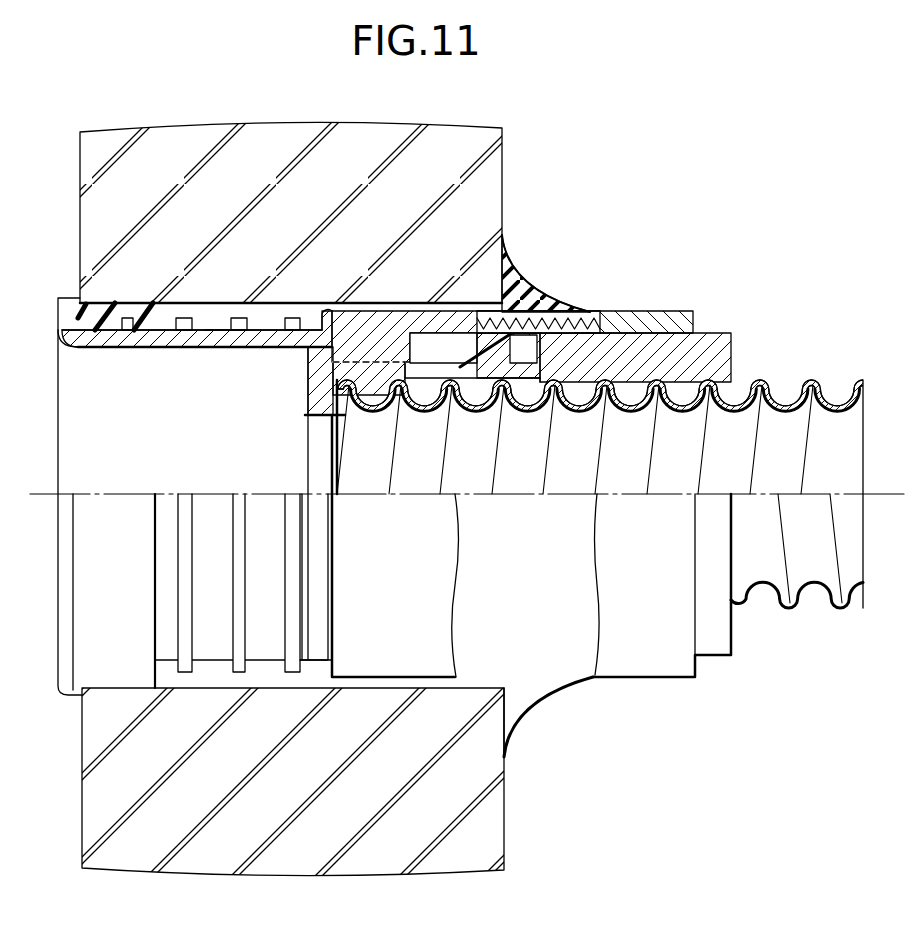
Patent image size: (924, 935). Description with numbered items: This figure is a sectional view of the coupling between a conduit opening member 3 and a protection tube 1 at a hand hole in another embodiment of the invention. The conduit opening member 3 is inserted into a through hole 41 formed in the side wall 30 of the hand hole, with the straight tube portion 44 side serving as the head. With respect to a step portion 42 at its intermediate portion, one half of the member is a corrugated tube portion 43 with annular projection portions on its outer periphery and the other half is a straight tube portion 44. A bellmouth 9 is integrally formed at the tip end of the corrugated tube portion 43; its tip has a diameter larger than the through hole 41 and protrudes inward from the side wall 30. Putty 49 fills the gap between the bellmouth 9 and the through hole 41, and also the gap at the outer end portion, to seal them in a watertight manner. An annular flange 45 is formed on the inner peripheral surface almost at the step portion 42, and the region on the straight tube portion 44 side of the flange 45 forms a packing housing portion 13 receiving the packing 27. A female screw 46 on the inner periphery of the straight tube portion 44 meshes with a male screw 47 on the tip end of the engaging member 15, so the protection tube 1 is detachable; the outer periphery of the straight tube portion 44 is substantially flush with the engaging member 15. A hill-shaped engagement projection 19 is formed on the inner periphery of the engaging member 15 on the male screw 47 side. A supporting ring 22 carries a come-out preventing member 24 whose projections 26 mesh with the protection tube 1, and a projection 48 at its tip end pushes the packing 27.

The protection tube 1 is at (789, 378).
The conduit opening member 3 is at (270, 316).
The bellmouth 9 is at (70, 330).
The packing housing portion 13 is at (312, 377).
The engaging member 15 is at (668, 318).
The engagement projection 19 is at (536, 404).
The supporting ring 22 is at (711, 338).
The come-out preventing member 24 is at (453, 343).
The projection 26 is at (472, 408).
The packing 27 is at (377, 412).
The side wall 30 is at (82, 195).
The through hole 41 is at (190, 312).
The step portion 42 is at (334, 306).
The corrugated tube portion 43 is at (213, 330).
The straight tube portion 44 is at (438, 318).
The annular flange 45 is at (310, 402).
The female screw 46 is at (548, 322).
The male screw 47 is at (580, 318).
The projection 48 is at (428, 402).
The putty 49 is at (98, 305).